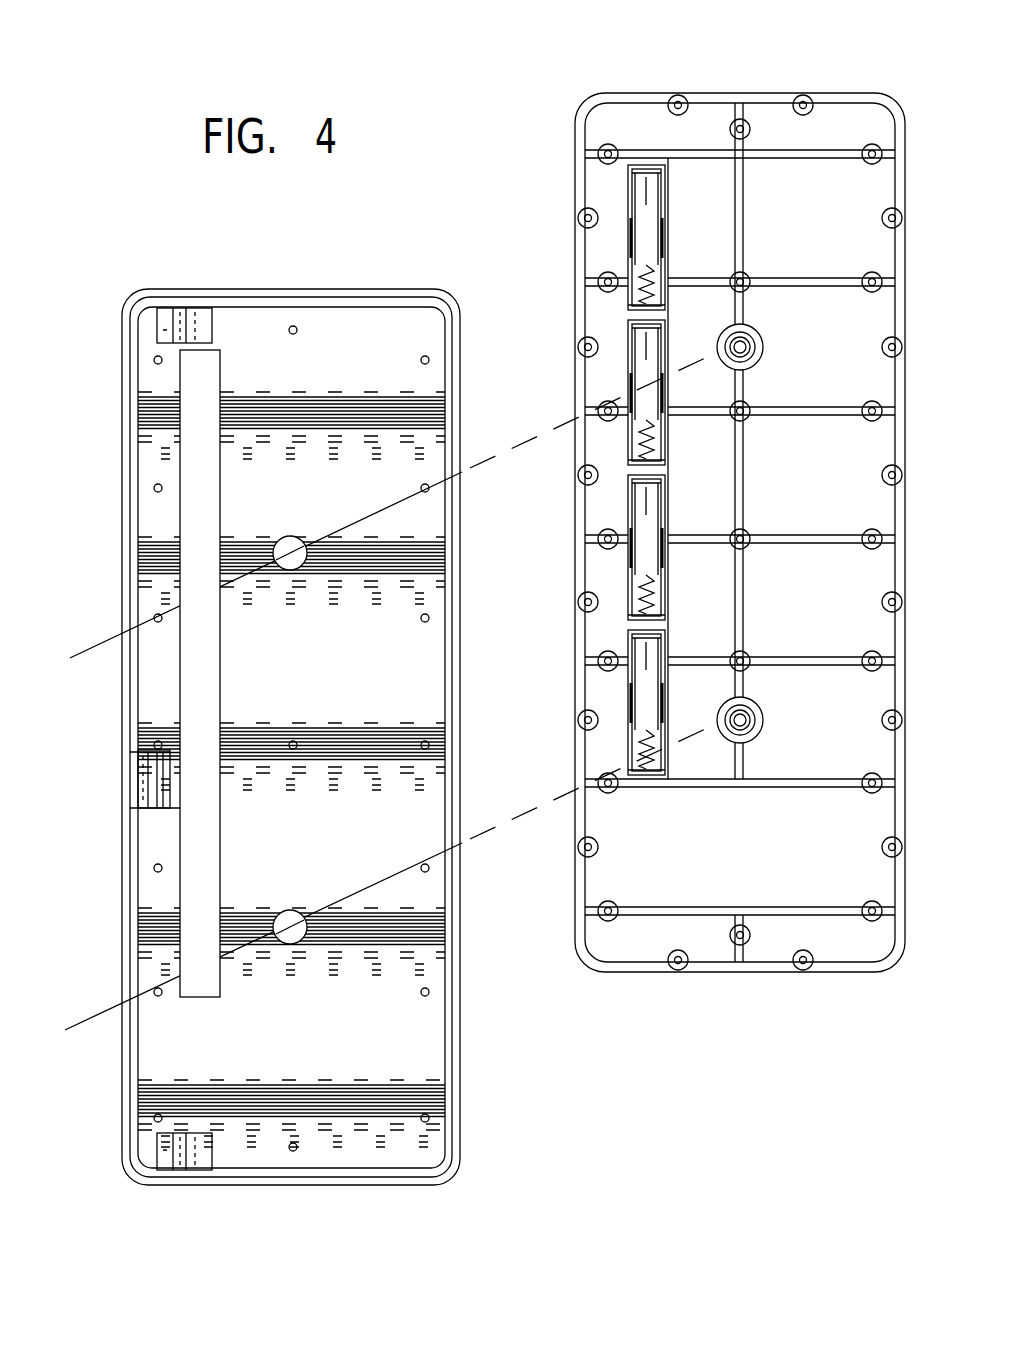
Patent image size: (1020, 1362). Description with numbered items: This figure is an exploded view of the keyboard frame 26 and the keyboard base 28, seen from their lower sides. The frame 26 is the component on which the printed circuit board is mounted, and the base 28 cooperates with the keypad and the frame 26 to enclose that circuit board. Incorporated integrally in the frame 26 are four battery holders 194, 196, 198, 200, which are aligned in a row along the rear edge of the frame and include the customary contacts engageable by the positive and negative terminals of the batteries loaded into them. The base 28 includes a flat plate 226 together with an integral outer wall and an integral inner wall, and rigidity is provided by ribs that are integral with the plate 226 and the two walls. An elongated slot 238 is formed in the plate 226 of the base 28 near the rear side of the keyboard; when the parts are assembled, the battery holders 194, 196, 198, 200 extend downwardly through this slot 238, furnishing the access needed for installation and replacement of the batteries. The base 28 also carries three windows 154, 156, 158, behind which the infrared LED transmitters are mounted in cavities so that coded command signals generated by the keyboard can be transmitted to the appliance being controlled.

The frame 26 is at (683, 91).
The base 28 is at (105, 483).
The window 154 is at (197, 1186).
The window 156 is at (117, 768).
The window 158 is at (200, 289).
The battery holder 194 is at (633, 197).
The battery holder 196 is at (633, 385).
The battery holder 198 is at (633, 585).
The battery holder 200 is at (633, 700).
The flat plate 226 is at (334, 648).
The elongated slot 238 is at (180, 517).